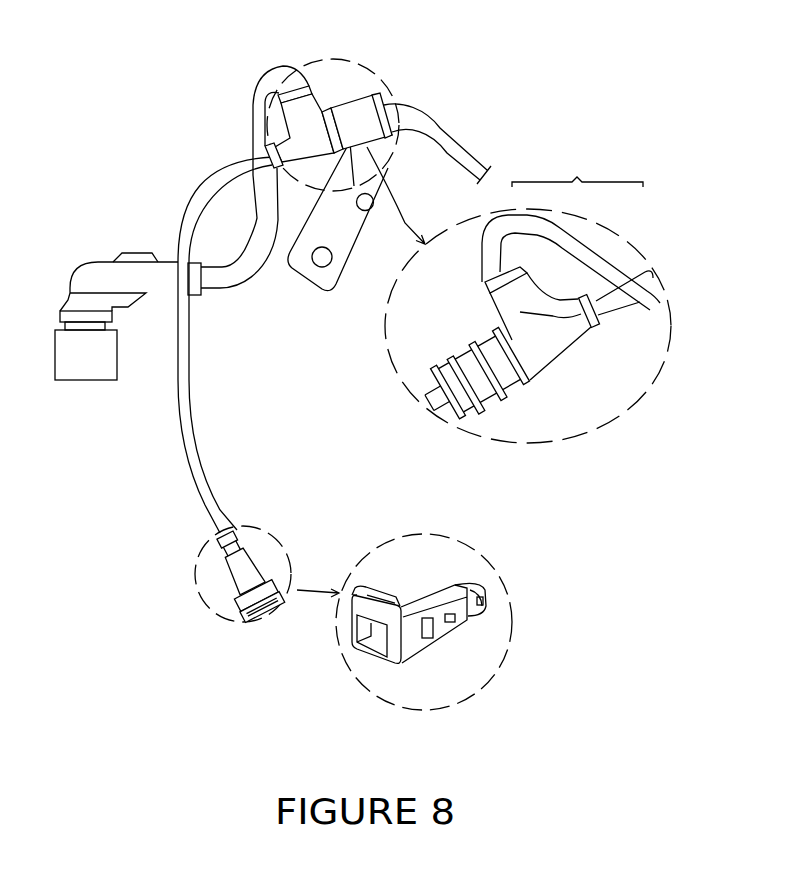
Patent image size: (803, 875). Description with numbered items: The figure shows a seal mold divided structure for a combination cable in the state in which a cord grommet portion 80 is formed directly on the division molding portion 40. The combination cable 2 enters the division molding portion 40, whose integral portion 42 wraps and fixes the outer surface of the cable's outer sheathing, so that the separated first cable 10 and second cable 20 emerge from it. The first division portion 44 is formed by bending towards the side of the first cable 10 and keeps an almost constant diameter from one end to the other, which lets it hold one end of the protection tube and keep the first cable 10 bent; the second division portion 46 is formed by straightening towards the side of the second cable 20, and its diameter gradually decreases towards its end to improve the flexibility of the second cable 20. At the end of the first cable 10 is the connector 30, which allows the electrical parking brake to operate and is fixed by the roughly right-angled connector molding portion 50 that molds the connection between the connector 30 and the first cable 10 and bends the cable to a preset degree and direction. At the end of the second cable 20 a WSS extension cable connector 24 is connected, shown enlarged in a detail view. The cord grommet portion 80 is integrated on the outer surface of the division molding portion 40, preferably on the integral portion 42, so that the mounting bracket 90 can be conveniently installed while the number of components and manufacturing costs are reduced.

The combination cable 2 is at (458, 148).
The first cable 10 is at (257, 108).
The second cable 20 is at (189, 365).
The WSS extension cable connector 24 is at (232, 580).
The connector 30 is at (80, 377).
The division molding portion 40 is at (339, 75).
The integral portion 42 is at (517, 348).
The first division portion 44 is at (530, 288).
The second division portion 46 is at (576, 292).
The connector molding portion 50 is at (132, 253).
The cord grommet portion 80 is at (358, 102).
The mounting bracket 90 is at (322, 262).